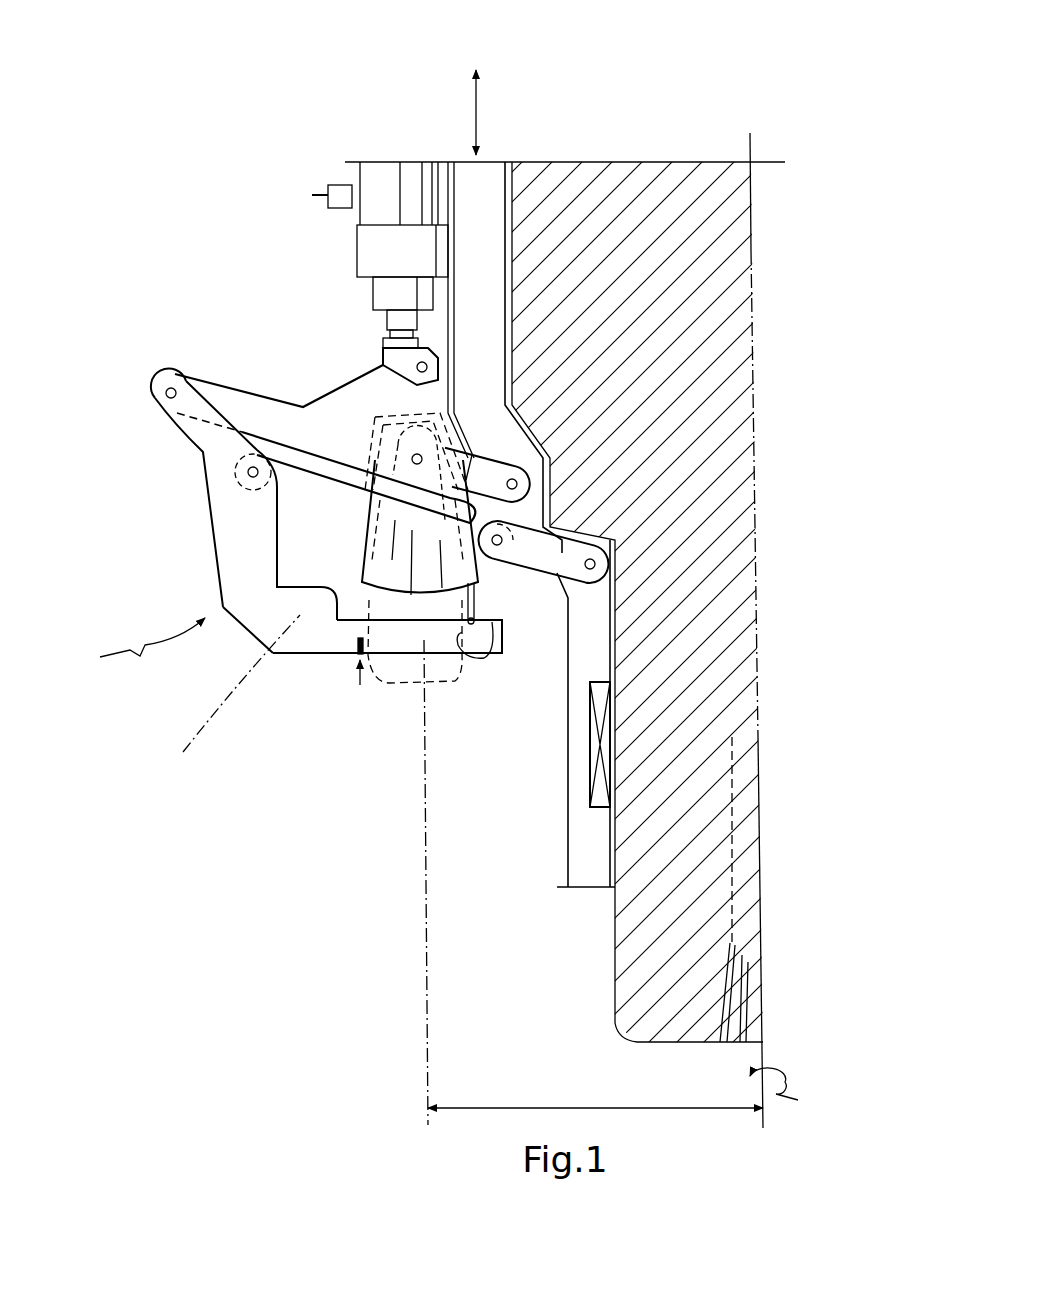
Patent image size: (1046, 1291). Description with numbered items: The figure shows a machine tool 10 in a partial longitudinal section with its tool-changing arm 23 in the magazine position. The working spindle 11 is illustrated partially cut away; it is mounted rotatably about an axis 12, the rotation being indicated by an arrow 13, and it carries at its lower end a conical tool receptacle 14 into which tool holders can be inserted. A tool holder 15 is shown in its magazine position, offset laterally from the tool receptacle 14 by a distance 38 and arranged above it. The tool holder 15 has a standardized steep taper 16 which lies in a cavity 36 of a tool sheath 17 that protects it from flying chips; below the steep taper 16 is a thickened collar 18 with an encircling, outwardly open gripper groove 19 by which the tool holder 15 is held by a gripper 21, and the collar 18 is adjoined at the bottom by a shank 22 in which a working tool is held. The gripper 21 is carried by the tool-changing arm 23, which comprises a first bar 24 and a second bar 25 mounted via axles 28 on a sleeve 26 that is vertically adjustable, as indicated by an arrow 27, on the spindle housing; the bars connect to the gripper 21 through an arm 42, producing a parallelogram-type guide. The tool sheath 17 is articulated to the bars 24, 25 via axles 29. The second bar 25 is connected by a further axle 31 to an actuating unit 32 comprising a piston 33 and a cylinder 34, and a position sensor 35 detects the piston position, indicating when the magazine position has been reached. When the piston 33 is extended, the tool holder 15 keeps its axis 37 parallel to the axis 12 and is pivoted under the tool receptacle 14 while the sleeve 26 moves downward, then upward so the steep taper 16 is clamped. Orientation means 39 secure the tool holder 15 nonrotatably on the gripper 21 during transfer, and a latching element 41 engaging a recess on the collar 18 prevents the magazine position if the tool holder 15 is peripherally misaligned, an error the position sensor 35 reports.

The machine tool 10 is at (653, 106).
The working spindle 11 is at (700, 655).
The axis 12 is at (758, 768).
The arrow 13 is at (788, 1090).
The conical tool receptacle 14 is at (728, 980).
The tool holder 15 is at (360, 690).
The steep taper 16 is at (360, 575).
The tool sheath 17 is at (352, 633).
The thickened collar 18 is at (455, 660).
The gripper groove 19 is at (473, 637).
The gripper 21 is at (227, 691).
The shank 22 is at (410, 667).
The tool-changing arm 23 is at (137, 644).
The first bar 24 is at (310, 487).
The second bar 25 is at (322, 405).
The sleeve 26 is at (486, 170).
The arrow 27 is at (478, 100).
The axles 28 is at (166, 393).
The axles 29 is at (424, 457).
The further axle 31 is at (430, 362).
The actuating unit 32 is at (342, 247).
The piston 33 is at (433, 290).
The cylinder 34 is at (382, 180).
The position sensor 35 is at (330, 185).
The cavity 36 is at (245, 628).
The axis 37 is at (425, 865).
The distance 38 is at (548, 1106).
The orientation means 39 is at (347, 660).
The latching element 41 is at (490, 622).
The arm 42 is at (242, 552).